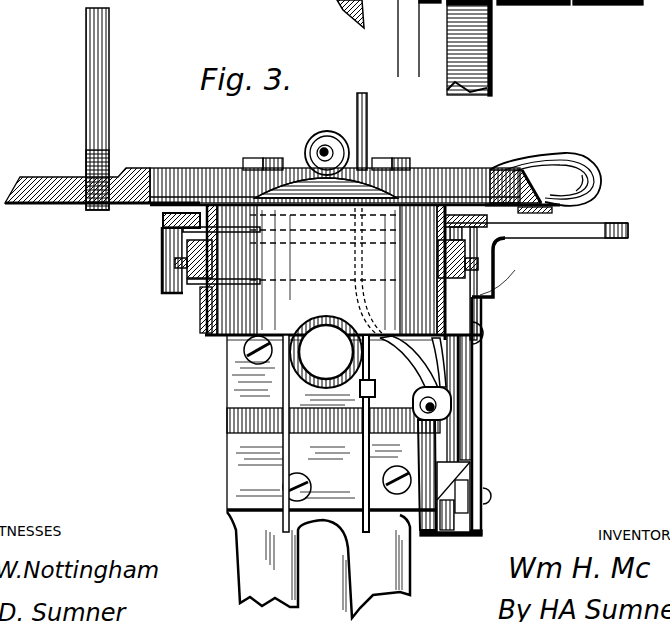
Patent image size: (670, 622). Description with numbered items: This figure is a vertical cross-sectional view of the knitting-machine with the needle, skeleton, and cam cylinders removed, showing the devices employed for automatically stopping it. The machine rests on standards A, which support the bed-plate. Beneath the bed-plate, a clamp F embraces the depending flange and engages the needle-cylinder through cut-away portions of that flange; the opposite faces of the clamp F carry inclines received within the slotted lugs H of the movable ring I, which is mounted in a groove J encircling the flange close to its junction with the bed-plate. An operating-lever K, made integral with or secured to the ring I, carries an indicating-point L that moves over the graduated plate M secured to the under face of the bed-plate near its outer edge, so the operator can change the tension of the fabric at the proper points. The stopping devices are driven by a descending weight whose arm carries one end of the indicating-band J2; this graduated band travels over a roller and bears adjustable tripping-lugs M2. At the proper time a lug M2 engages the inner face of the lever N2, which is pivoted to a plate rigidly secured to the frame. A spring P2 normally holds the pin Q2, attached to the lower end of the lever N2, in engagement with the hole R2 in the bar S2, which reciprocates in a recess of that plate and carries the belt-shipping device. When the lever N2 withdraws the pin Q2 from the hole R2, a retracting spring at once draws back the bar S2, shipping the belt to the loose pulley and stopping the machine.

The lever N2 is at (367, 120).
The indicating-point L is at (585, 204).
The operating-lever K is at (547, 259).
The graduated plate M is at (546, 214).
The groove J is at (493, 241).
The movable ring I is at (165, 222).
The slotted lugs H is at (175, 263).
The clamp F is at (178, 270).
The indicating-band J2 is at (321, 433).
The tripping-lugs M2 is at (375, 381).
The spring P2 is at (418, 352).
The hole R2 is at (457, 547).
The pin Q2 is at (440, 537).
The bar S2 is at (470, 482).
The standards A is at (318, 565).